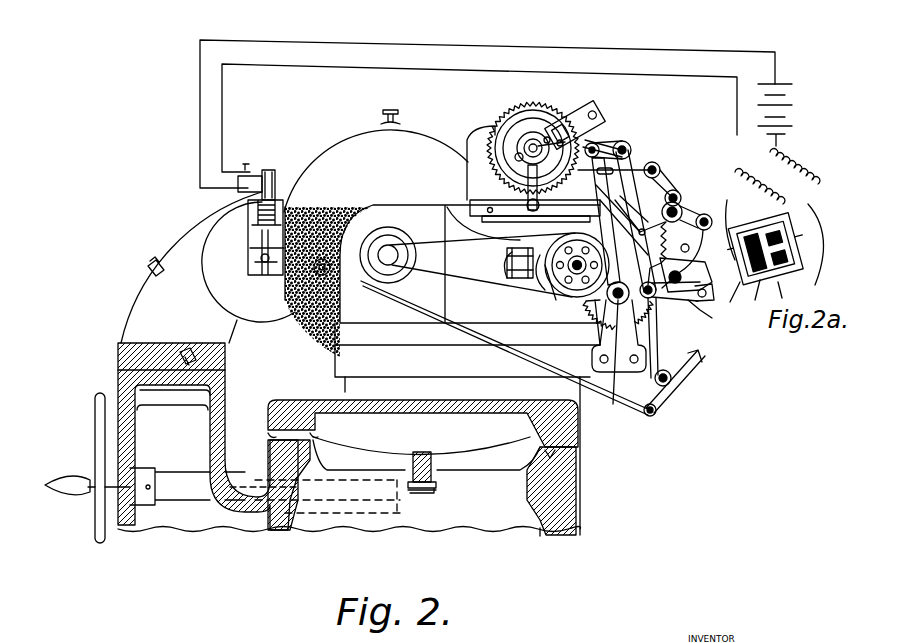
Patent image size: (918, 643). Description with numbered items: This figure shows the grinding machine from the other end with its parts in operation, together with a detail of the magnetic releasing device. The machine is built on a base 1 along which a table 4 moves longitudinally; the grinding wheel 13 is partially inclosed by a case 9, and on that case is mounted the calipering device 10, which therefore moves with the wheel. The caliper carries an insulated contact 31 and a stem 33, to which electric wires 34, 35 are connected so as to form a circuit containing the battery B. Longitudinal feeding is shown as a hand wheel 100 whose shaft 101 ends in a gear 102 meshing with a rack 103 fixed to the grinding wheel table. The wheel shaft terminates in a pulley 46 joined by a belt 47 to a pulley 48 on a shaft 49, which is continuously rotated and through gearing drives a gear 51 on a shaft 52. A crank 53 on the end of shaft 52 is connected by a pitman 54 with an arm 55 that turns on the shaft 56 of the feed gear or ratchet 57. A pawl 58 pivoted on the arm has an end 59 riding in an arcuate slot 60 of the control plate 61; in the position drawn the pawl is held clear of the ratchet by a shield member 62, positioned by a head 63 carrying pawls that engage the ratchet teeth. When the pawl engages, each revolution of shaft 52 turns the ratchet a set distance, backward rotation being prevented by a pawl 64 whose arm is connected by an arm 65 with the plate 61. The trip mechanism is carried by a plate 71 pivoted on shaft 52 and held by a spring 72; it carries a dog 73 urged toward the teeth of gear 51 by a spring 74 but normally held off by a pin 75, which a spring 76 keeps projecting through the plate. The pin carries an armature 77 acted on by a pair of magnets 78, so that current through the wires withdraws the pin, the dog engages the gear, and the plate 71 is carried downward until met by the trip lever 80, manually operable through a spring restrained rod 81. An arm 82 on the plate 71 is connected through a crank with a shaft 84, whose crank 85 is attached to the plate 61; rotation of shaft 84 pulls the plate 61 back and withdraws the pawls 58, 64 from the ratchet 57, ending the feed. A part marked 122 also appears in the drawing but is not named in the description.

In FIG. 2, the base 1 is at (540, 530).
In FIG. 2, the table 4 is at (298, 410).
In FIG. 2, the case 9 is at (348, 145).
In FIG. 2, the calipering device 10 is at (262, 232).
In FIG. 2, the grinding wheel 13 is at (312, 330).
In FIG. 2, the contact 31 is at (246, 172).
In FIG. 2, the stem 33 is at (248, 192).
In FIG. 2, the electric wire 34 is at (222, 79).
In FIG. 2, the electric wire 35 is at (200, 86).
In FIG. 2, the pulley 46 is at (392, 252).
In FIG. 2, the belt 47 is at (463, 275).
In FIG. 2, the pulley 48 is at (566, 288).
In FIG. 2, the shaft 49 is at (540, 282).
In FIG. 2, the gear 51 is at (602, 318).
In FIG. 2, the shaft 52 is at (614, 404).
In FIG. 2, the crank 53 is at (645, 325).
In FIG. 2, the pitman 54 is at (642, 160).
In FIG. 2, the arm 55 is at (626, 146).
In FIG. 2, the shaft 56 is at (537, 140).
In FIG. 2, the feed gear or ratchet 57 is at (503, 108).
In FIG. 2, the pawl 58 is at (605, 140).
In FIG. 2, the end 59 is at (596, 170).
In FIG. 2, the arcuate slot 60 is at (614, 205).
In FIG. 2, the control plate 61 is at (658, 170).
In FIG. 2, the shield member 62 is at (596, 118).
In FIG. 2, the head 63 is at (540, 146).
In FIG. 2, the pawl 64 is at (507, 255).
In FIG. 2, the arm 65 is at (535, 272).
In FIG. 2, the plate 71 is at (710, 298).
In FIG. 2A, the plate 71 is at (742, 302).
In FIG. 2, the spring 72 is at (705, 214).
In FIG. 2, the dog 73 is at (668, 296).
In FIG. 2, the spring 74 is at (705, 312).
In FIG. 2A, the pin 75 is at (732, 220).
In FIG. 2A, the spring 76 is at (772, 290).
In FIG. 2A, the armature 77 is at (768, 228).
In FIG. 2A, the magnets 78 is at (792, 272).
In FIG. 2, the trip lever 80 is at (702, 366).
In FIG. 2, the spring restrained rod 81 is at (472, 336).
In FIG. 2, the arm 82 is at (720, 254).
In FIG. 2, the shaft 84 is at (636, 238).
In FIG. 2, the crank 85 is at (679, 200).
In FIG. 2, the hand wheel 100 is at (95, 540).
In FIG. 2, the shaft 101 is at (190, 490).
In FIG. 2, the gear 102 is at (428, 492).
In FIG. 2, the rack 103 is at (430, 466).
In FIG. 2, the motor base 122 is at (486, 207).
In FIG. 2, the battery B is at (785, 115).